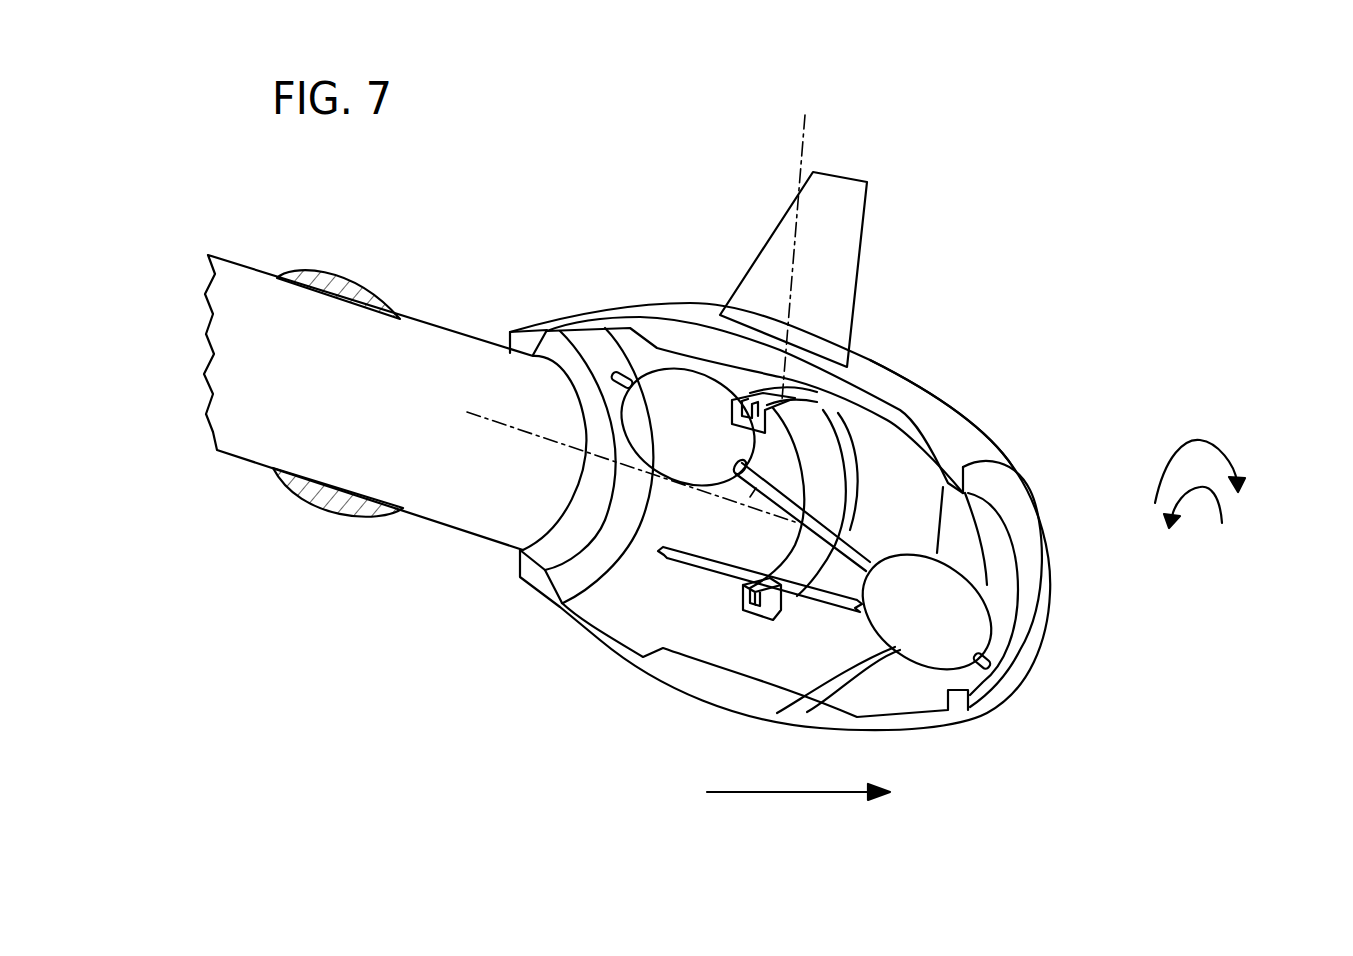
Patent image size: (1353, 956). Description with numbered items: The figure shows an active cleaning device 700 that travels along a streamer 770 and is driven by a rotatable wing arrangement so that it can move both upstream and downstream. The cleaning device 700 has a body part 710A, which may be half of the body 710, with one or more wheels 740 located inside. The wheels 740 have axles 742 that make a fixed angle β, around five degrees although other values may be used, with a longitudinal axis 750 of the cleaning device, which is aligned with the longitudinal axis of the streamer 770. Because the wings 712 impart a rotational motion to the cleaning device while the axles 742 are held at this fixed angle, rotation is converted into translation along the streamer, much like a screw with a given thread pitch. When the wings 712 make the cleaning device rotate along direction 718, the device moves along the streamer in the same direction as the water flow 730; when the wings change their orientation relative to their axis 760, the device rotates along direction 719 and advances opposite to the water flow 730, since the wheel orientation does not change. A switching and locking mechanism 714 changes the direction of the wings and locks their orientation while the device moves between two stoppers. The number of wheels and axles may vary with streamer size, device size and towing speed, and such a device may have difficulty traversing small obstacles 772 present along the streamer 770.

The cleaning device 700 is at (903, 72).
The body 710 is at (1030, 462).
The body part 710A is at (887, 410).
The wings 712 is at (826, 262).
The switching and locking mechanism 714 is at (703, 560).
The direction 718 is at (1200, 440).
The direction 719 is at (1220, 523).
The water flow 730 is at (783, 793).
The wheels 740 is at (655, 428).
The axles 742 is at (780, 498).
The longitudinal axis 750 is at (710, 497).
The axis 760 is at (793, 147).
The streamer 770 is at (435, 372).
The obstacles 772 is at (338, 273).